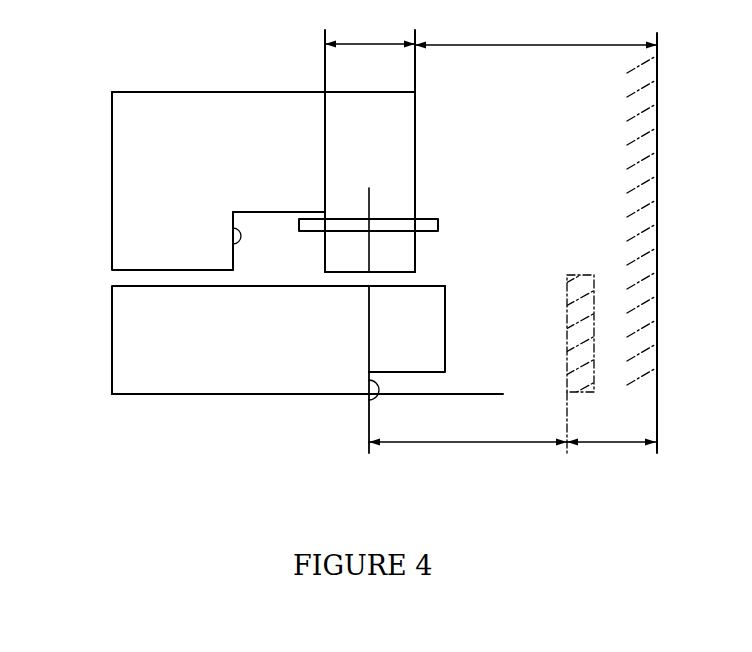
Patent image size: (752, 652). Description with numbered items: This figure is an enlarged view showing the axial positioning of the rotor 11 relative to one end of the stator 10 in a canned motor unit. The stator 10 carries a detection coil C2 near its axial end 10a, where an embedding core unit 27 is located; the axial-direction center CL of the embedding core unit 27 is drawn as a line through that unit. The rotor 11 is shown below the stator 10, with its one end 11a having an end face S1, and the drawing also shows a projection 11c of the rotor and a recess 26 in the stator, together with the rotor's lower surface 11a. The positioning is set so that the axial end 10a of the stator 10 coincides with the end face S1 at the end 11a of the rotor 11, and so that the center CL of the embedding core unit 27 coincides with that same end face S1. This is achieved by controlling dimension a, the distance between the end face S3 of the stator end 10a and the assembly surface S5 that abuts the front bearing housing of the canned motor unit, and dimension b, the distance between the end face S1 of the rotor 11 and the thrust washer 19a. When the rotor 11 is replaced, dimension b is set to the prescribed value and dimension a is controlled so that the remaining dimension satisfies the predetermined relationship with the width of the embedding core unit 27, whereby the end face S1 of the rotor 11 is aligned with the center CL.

The stator 10 is at (102, 183).
The axial end of stator 10a is at (279, 106).
The rotor 11 is at (102, 328).
The end of rotor 11a is at (273, 383).
The projection of member 11 11c is at (446, 332).
The recess 26 is at (232, 247).
The embedding core unit 27 is at (398, 261).
The thrust washer 19a is at (567, 383).
The end face of rotor S1 is at (369, 402).
The end face of stator end S3 is at (416, 110).
The assembly surface S5 is at (658, 163).
The detection coil C2 is at (439, 224).
The axial-direction center of embedding core unit CL is at (371, 192).
The dimension a is at (521, 45).
The dimension b is at (456, 446).